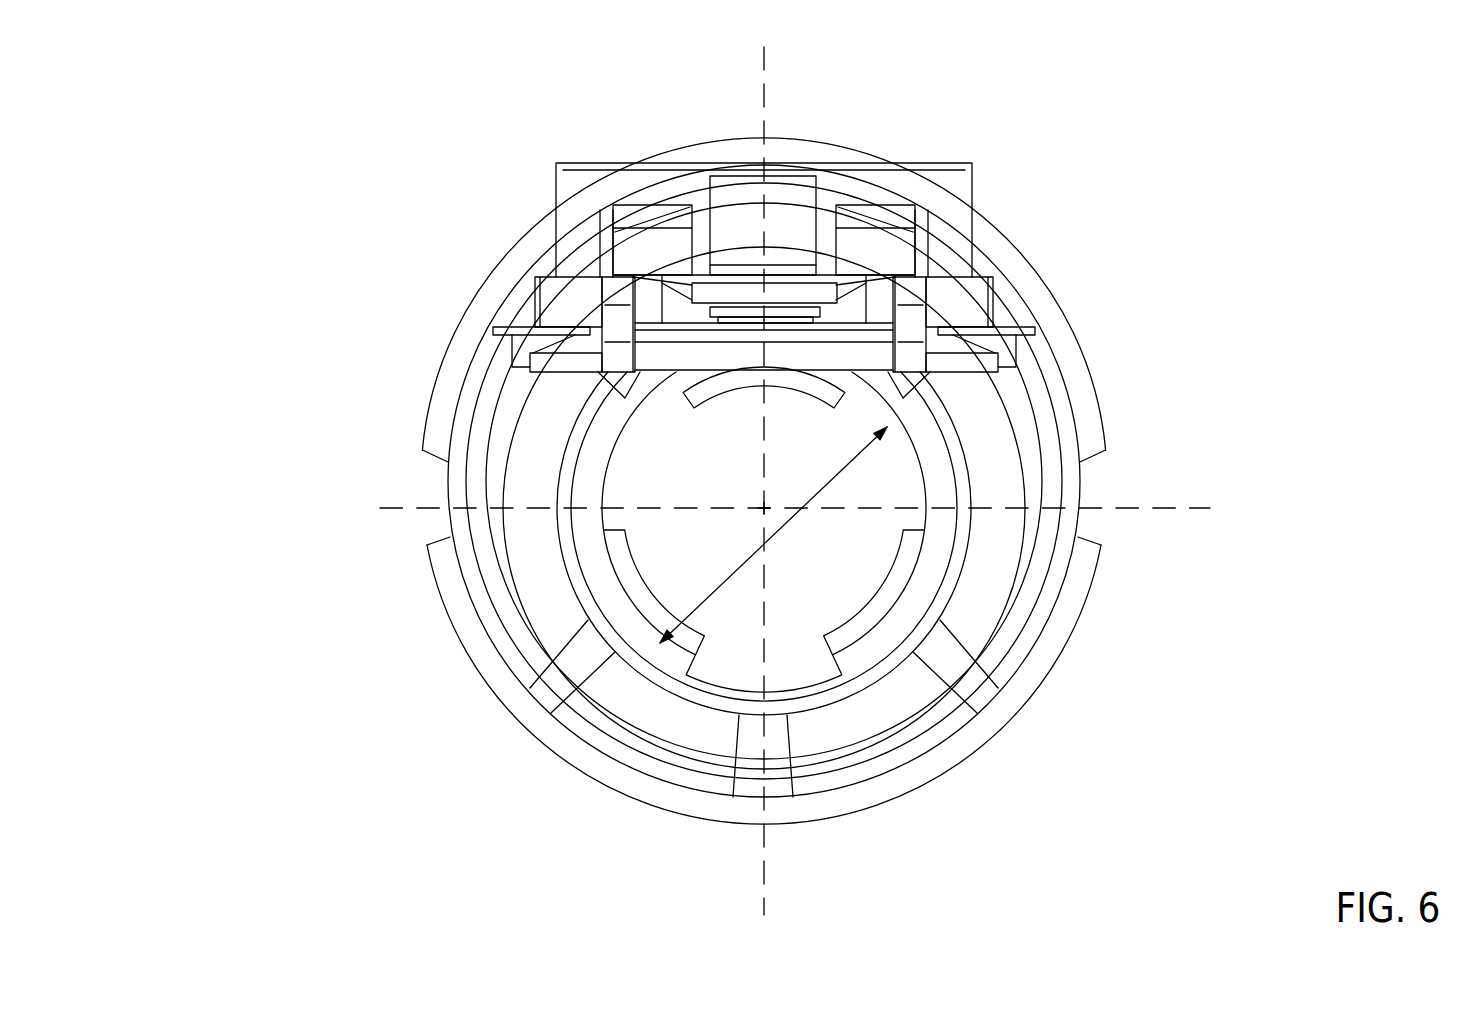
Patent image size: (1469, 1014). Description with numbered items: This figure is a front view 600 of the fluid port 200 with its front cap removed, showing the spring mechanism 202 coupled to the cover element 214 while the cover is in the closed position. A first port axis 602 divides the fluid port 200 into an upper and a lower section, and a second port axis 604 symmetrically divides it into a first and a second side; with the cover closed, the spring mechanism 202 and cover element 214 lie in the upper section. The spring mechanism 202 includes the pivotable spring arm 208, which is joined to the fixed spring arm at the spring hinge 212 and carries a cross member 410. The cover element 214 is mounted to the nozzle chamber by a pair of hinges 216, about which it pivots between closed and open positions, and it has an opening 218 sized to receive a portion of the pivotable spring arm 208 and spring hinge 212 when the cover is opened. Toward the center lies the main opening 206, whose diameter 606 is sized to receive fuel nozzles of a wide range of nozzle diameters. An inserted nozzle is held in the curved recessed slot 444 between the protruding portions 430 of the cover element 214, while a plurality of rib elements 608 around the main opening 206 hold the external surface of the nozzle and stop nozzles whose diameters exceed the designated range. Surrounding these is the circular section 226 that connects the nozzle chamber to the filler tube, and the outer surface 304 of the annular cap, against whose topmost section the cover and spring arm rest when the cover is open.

The front view 600 is at (133, 87).
The fluid port 200 is at (498, 715).
The spring mechanism 202 is at (800, 154).
The main opening 206 is at (803, 662).
The pivotable spring arm 208 is at (893, 202).
The spring hinge 212 is at (728, 193).
The cover element 214 is at (541, 370).
The pair of hinges 216 is at (583, 270).
The opening 218 is at (847, 312).
The circular section 226 is at (1053, 327).
The outer surface 304 is at (640, 712).
The cross member 410 is at (737, 297).
The protruding portion 430 is at (773, 535).
The curved recessed slot 444 is at (746, 380).
The first port axis 602 is at (1190, 503).
The second port axis 604 is at (772, 866).
The diameter 606 is at (780, 532).
The plurality of rib elements 608 is at (620, 578).